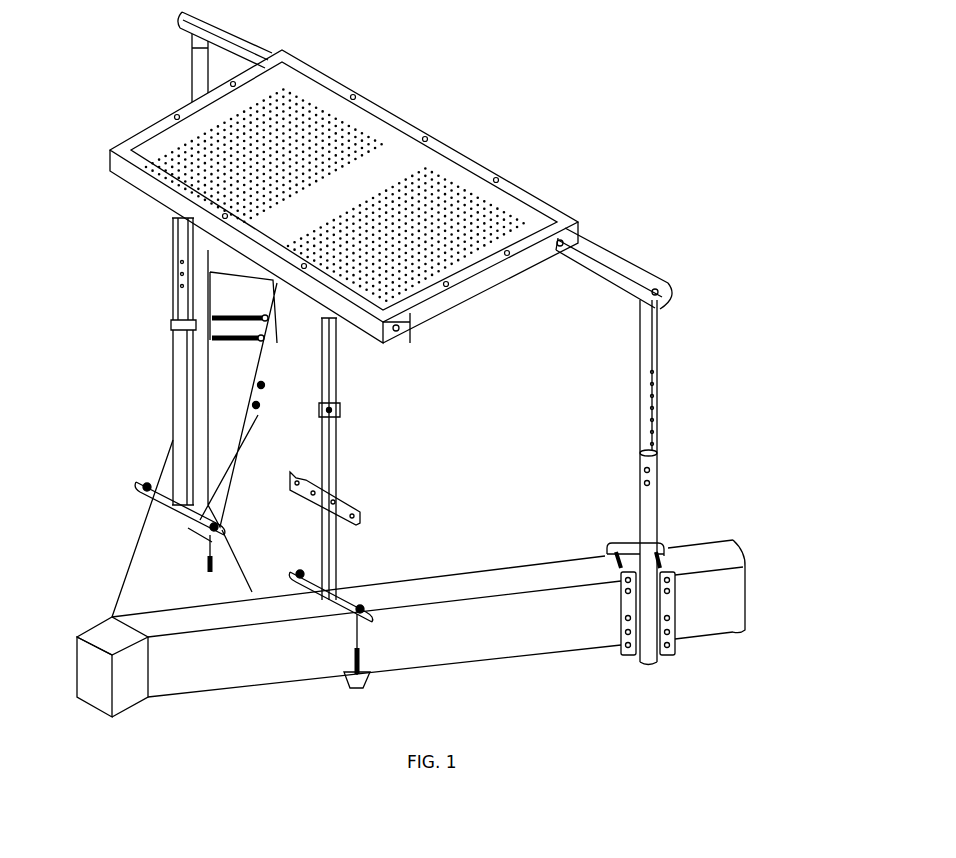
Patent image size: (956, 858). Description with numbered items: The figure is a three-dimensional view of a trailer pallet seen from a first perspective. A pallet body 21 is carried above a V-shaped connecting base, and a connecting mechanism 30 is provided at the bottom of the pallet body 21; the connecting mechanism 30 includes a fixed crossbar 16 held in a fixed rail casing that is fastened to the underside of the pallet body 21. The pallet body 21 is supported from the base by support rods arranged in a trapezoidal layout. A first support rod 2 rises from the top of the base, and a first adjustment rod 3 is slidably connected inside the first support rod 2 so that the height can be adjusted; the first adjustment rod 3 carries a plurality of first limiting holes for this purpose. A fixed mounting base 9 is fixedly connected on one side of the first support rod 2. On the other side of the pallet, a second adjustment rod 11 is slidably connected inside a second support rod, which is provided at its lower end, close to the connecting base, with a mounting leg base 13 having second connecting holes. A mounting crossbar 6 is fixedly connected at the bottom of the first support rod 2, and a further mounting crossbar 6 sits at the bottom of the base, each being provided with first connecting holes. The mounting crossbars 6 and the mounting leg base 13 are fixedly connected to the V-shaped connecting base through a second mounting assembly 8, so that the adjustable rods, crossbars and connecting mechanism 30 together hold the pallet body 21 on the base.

The first support rod 2 is at (173, 380).
The first adjustment rod 3 is at (173, 259).
The mounting crossbar 6 is at (143, 486).
The second mounting assembly 8 is at (365, 638).
The fixed mounting base 9 is at (313, 490).
The second adjustment rod 11 is at (652, 343).
The mounting leg base 13 is at (676, 594).
The fixed crossbar 16 is at (603, 253).
The pallet body 21 is at (457, 158).
The connecting mechanism 30 is at (208, 50).